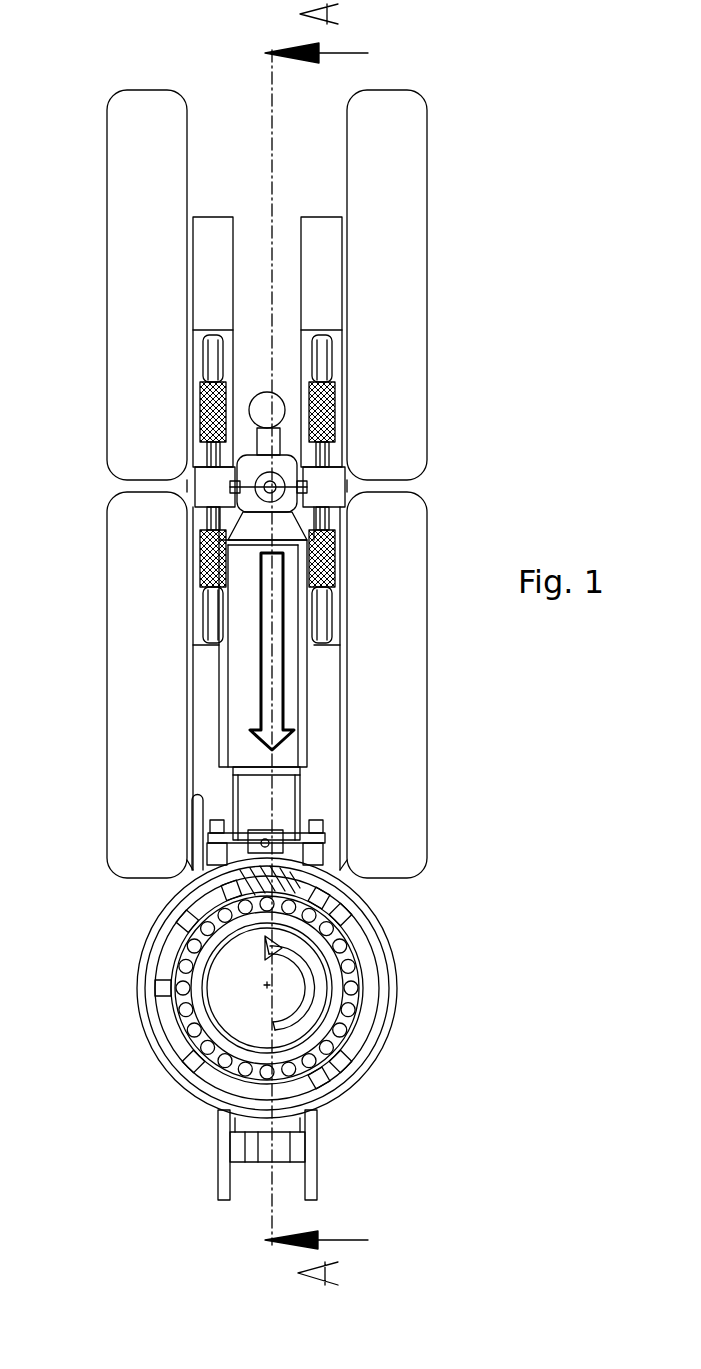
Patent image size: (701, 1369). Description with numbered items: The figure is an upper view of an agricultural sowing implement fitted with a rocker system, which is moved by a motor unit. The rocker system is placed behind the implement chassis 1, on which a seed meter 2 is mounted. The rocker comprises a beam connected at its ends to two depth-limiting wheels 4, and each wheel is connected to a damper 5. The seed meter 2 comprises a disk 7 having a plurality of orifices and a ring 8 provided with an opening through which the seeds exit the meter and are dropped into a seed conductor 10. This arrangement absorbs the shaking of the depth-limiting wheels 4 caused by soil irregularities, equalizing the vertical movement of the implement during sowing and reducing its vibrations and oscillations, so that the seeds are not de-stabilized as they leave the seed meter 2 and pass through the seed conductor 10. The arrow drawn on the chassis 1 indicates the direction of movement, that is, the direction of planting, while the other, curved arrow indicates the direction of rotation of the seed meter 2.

The implement chassis 1 is at (297, 752).
The seed meter 2 is at (163, 1033).
The depth-limiting wheels 4 is at (393, 298).
The damper 5 is at (322, 372).
The disk 7 is at (182, 1013).
The ring 8 is at (190, 943).
The seed conductor 10 is at (230, 880).